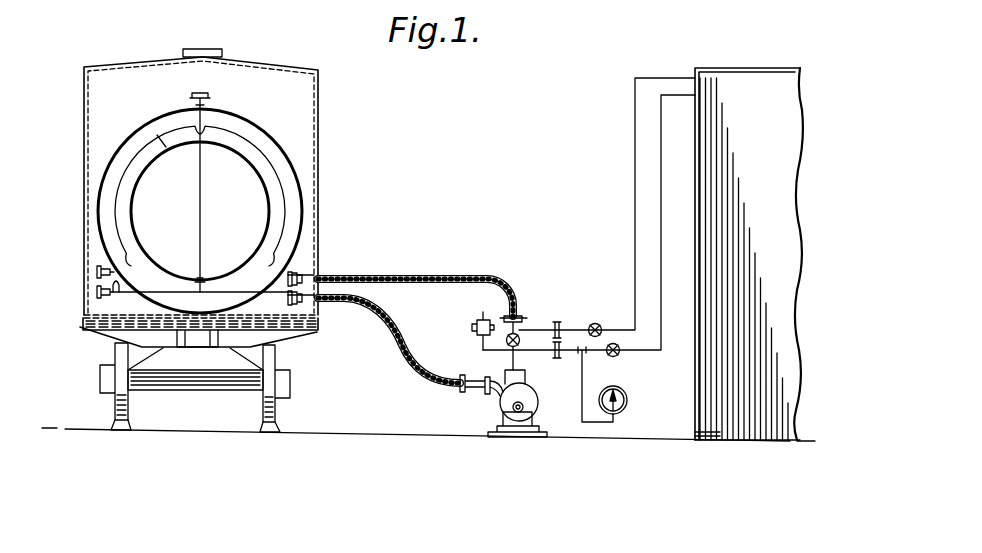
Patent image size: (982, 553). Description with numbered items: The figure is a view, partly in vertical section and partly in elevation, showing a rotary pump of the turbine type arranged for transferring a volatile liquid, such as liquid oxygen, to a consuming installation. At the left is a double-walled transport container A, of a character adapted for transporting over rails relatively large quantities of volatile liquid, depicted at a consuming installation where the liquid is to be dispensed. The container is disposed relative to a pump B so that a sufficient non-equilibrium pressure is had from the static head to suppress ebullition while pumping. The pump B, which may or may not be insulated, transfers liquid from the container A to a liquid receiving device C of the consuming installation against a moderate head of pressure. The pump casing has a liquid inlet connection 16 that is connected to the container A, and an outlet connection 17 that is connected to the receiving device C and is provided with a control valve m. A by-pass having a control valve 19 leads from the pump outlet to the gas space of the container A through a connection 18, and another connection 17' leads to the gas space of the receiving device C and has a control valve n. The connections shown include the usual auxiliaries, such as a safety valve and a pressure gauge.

The double-walled transport container A is at (252, 121).
The pump B is at (490, 397).
The liquid receiving device C is at (752, 68).
The liquid inlet connection 16 is at (421, 373).
The outlet connection 17 is at (589, 258).
The connection 17' is at (607, 208).
The connection 18 is at (408, 278).
The control valve 19 is at (520, 335).
The control valve m is at (618, 355).
The control valve n is at (601, 325).